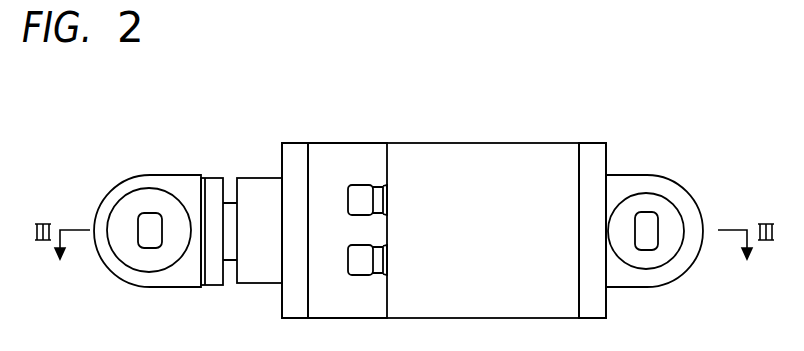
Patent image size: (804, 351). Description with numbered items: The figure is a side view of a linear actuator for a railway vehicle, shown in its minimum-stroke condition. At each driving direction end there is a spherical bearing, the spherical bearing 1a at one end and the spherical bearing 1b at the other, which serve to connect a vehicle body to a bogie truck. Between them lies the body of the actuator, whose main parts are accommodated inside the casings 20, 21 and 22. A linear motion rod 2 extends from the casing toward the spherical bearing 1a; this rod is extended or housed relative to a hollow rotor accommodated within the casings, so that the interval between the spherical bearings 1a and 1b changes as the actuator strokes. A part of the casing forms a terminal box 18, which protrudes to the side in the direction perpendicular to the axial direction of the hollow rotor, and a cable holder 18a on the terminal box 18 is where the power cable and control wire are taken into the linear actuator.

The spherical bearing 1a is at (129, 204).
The spherical bearing 1b is at (665, 208).
The linear motion rod 2 is at (232, 212).
The terminal box 18 is at (513, 160).
The cable holder 18a is at (360, 193).
The casing 20 is at (295, 155).
The casing 21 is at (329, 152).
The casing 22 is at (592, 155).